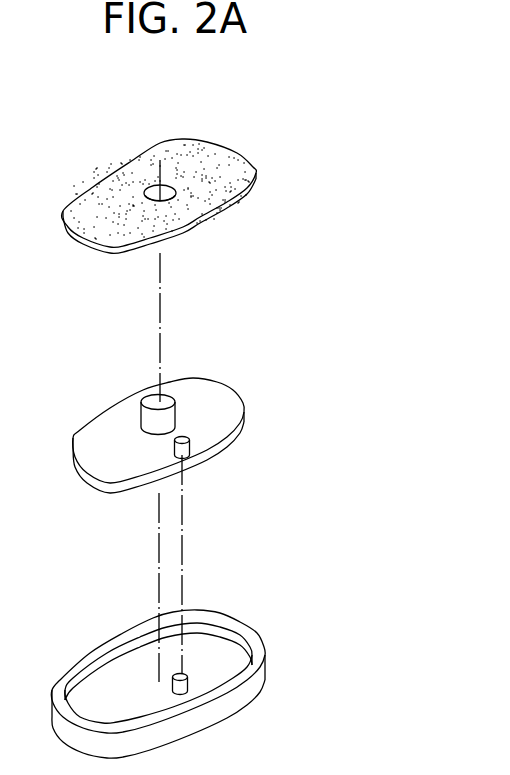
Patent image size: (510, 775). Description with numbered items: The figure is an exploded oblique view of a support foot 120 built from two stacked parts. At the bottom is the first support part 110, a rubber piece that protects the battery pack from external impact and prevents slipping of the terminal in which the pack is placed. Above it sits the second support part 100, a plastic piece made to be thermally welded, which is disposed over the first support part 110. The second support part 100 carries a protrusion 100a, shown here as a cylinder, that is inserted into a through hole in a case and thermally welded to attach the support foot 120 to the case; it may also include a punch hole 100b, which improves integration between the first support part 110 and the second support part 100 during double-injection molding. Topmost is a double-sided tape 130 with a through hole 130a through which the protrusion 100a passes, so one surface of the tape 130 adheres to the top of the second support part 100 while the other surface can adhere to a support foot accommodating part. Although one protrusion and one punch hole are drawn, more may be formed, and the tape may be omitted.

The double-sided tape 130 is at (232, 172).
The through hole 130a is at (168, 195).
The second support part 100 is at (220, 397).
The protrusion 100a is at (170, 400).
The punch hole 100b is at (188, 436).
The first support part 110 is at (253, 680).
The support foot 120 is at (403, 378).